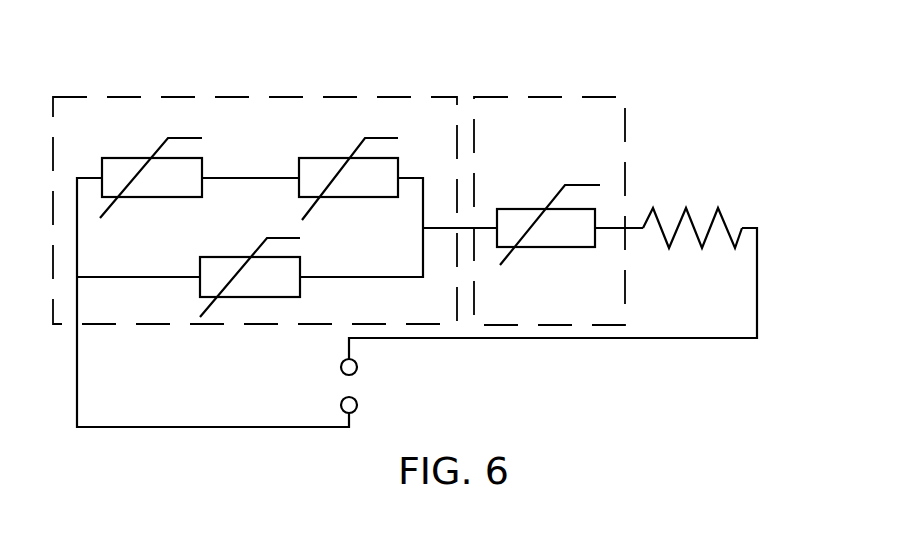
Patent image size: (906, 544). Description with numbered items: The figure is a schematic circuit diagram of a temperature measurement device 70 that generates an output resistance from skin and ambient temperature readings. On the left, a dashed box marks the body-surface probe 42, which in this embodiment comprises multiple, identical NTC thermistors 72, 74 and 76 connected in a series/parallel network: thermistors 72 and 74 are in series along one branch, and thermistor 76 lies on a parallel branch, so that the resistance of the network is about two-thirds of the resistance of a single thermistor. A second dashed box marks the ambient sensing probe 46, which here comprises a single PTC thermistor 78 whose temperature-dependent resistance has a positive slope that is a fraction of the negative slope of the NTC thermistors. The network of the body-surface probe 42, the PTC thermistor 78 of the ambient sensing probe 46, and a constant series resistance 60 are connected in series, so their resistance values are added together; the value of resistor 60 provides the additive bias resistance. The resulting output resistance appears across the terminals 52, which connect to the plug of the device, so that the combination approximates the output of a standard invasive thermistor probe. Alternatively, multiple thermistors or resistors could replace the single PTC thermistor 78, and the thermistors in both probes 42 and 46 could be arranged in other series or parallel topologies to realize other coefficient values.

The body-surface probe 42 is at (317, 95).
The ambient sensing probe 46 is at (548, 95).
The temperature measurement device 70 is at (732, 90).
The thermistor 72 is at (155, 198).
The thermistor 74 is at (352, 200).
The thermistor 76 is at (253, 297).
The PTC thermistor 78 is at (549, 248).
The constant series resistance 60 is at (712, 213).
The terminals 52 is at (340, 372).